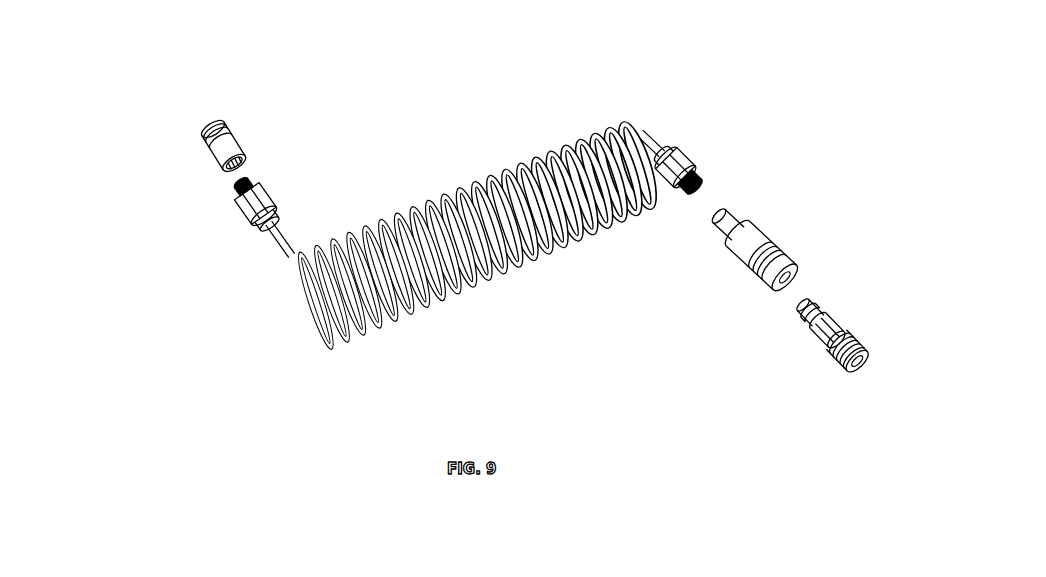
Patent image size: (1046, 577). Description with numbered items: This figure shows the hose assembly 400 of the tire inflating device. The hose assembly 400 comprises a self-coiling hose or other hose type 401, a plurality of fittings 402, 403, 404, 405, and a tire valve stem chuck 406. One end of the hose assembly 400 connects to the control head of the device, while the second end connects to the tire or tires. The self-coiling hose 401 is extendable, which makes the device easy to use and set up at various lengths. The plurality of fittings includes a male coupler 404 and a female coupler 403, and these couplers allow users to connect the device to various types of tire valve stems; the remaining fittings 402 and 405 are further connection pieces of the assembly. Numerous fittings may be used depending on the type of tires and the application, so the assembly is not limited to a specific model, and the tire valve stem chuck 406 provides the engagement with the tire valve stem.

The hose assembly 400 is at (322, 100).
The self-coiling hose 401 is at (636, 124).
The fitting 402 is at (683, 170).
The female coupler 403 is at (755, 240).
The male coupler 404 is at (835, 330).
The fitting 405 is at (246, 217).
The tire valve stem chuck 406 is at (207, 140).